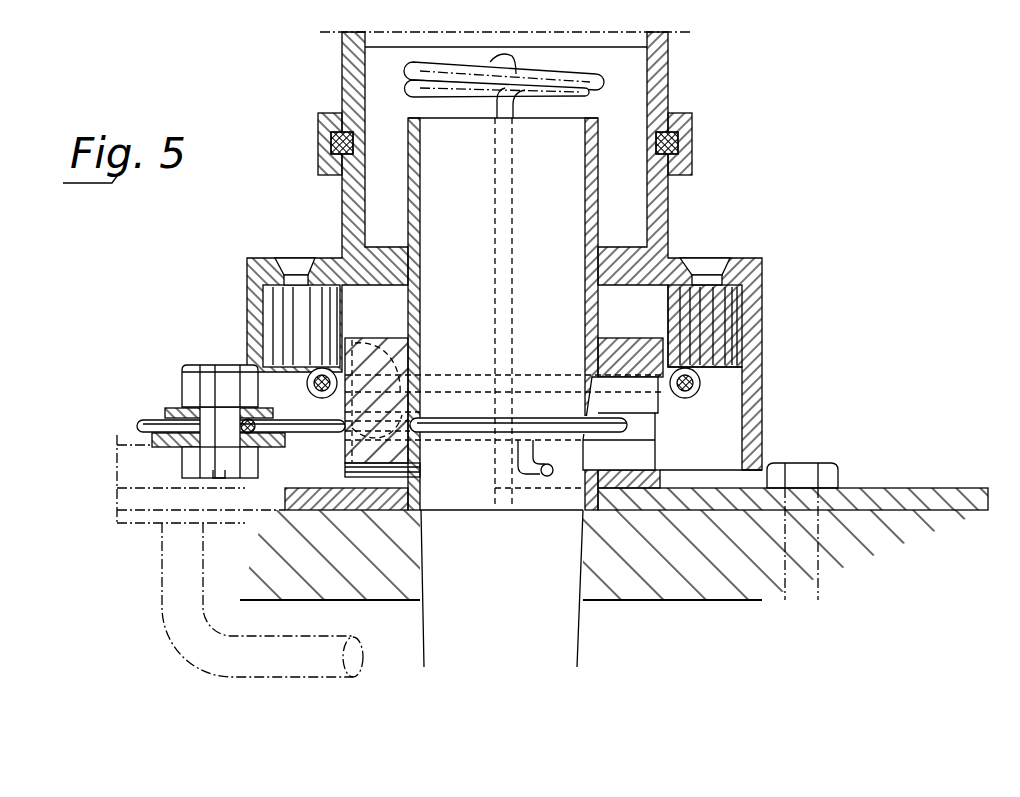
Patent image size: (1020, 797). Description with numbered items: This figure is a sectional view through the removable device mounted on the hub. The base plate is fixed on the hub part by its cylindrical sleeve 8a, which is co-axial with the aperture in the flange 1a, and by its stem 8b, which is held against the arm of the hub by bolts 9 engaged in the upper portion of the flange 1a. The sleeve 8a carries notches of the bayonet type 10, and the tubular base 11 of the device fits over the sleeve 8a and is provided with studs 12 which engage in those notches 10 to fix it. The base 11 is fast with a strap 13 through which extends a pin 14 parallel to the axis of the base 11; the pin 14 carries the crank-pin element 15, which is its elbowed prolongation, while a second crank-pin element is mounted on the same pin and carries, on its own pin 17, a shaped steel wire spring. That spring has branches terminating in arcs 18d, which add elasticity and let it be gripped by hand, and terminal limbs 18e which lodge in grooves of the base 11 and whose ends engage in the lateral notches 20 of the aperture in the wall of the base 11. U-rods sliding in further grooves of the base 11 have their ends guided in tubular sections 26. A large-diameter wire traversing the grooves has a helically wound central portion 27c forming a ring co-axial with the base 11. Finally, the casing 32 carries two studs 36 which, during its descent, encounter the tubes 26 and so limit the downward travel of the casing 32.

The flange 1a is at (683, 572).
The cylindrical sleeve 8a is at (422, 500).
The stem 8b is at (888, 498).
The bolts 9 is at (806, 470).
The bayonet-type notches 10 is at (497, 482).
The tubular base 11 is at (620, 352).
The studs 12 is at (545, 480).
The strap 13 is at (585, 213).
The pin 14 is at (170, 568).
The crank-pin element 15 is at (295, 655).
The pin 17 is at (207, 398).
The arcs 18d is at (358, 340).
The limbs 18e is at (436, 436).
The lateral notches 20 is at (648, 428).
The tubular sections 26 is at (308, 390).
The helically wound central portion 27c is at (603, 78).
The casing 32 is at (660, 245).
The studs 36 is at (283, 322).